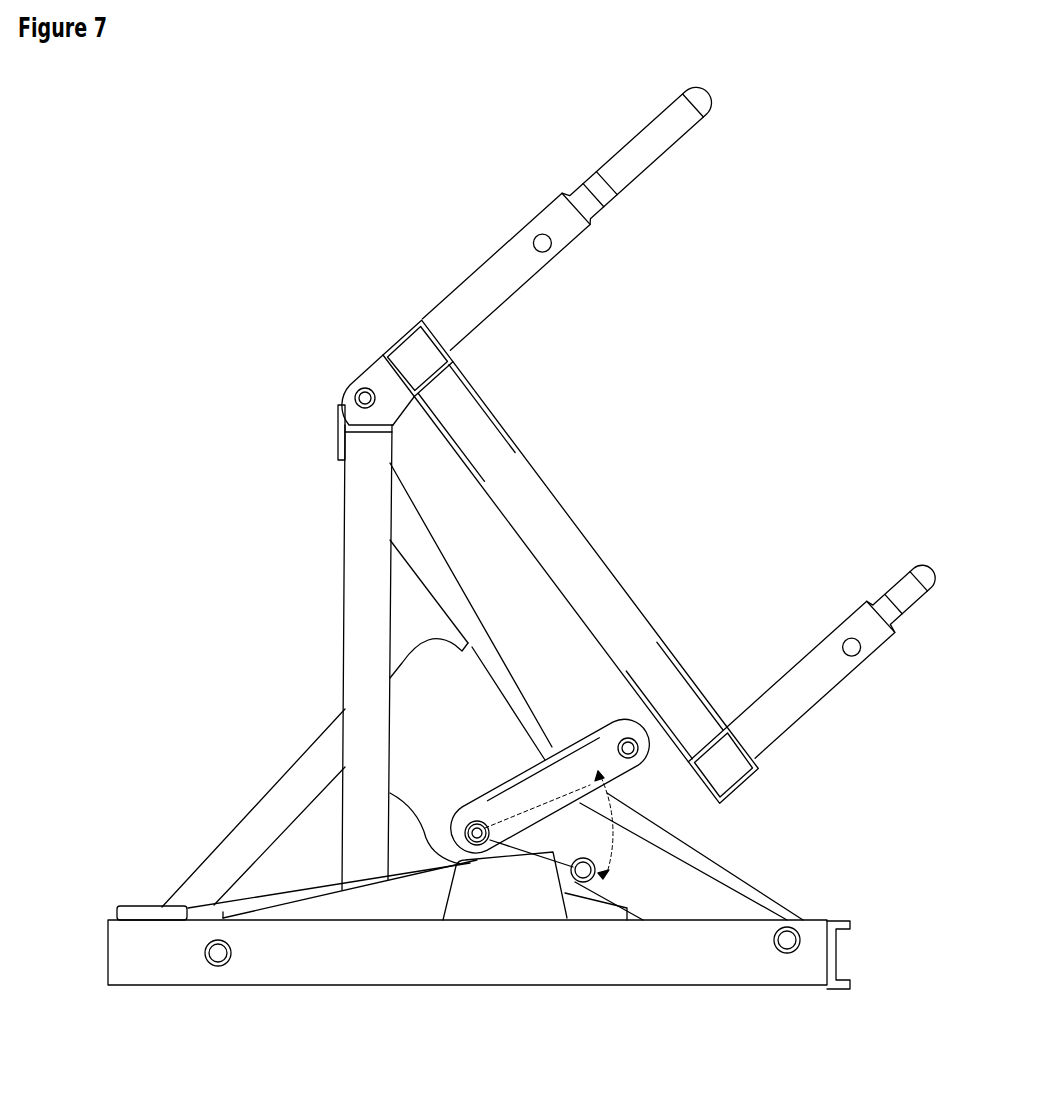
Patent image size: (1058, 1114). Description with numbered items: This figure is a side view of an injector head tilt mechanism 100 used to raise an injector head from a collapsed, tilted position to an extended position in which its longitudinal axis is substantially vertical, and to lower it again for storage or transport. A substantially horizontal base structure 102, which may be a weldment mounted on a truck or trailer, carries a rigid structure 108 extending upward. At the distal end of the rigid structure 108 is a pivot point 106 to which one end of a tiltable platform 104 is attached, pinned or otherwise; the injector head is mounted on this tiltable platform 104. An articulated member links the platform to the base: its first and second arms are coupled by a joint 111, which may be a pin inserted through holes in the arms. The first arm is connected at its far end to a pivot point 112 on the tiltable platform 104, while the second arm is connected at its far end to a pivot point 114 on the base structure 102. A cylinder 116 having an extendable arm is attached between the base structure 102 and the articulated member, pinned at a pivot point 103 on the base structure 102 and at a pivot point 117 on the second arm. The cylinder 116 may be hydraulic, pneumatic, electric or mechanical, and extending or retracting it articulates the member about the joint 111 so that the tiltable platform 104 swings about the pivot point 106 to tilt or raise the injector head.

The injector head tilt mechanism 100 is at (205, 262).
The base structure 102 is at (108, 956).
The pivot point 103 is at (216, 957).
The tiltable platform 104 is at (598, 548).
The pivot point 106 is at (357, 393).
The rigid structure 108 is at (343, 575).
The joint 111 is at (473, 843).
The pivot point 112 is at (638, 773).
The pivot point 114 is at (784, 942).
The cylinder 116 is at (380, 906).
The pivot point 117 is at (580, 882).